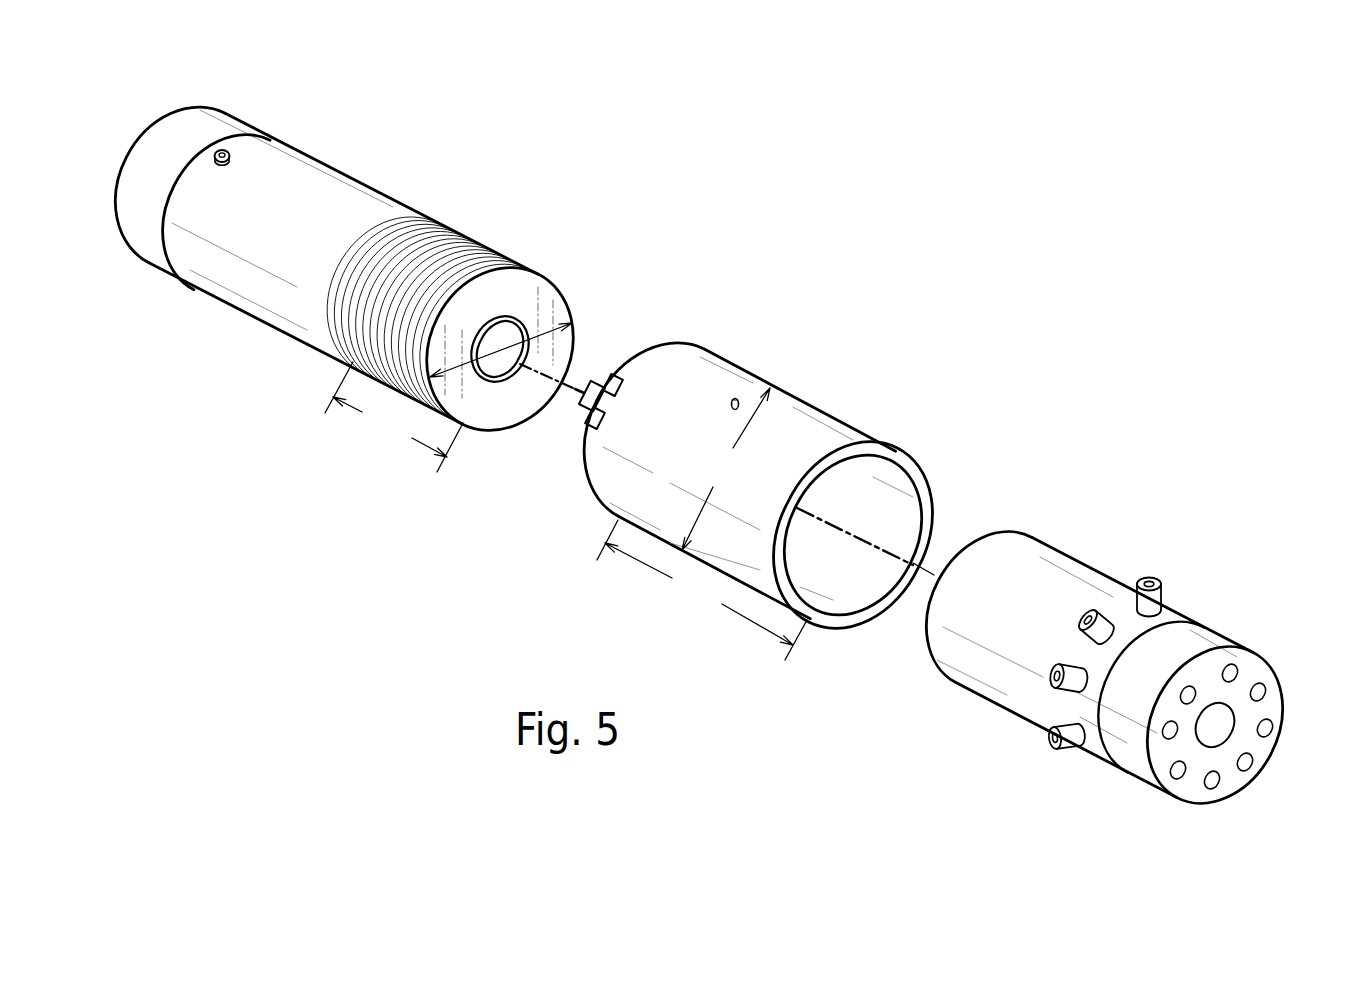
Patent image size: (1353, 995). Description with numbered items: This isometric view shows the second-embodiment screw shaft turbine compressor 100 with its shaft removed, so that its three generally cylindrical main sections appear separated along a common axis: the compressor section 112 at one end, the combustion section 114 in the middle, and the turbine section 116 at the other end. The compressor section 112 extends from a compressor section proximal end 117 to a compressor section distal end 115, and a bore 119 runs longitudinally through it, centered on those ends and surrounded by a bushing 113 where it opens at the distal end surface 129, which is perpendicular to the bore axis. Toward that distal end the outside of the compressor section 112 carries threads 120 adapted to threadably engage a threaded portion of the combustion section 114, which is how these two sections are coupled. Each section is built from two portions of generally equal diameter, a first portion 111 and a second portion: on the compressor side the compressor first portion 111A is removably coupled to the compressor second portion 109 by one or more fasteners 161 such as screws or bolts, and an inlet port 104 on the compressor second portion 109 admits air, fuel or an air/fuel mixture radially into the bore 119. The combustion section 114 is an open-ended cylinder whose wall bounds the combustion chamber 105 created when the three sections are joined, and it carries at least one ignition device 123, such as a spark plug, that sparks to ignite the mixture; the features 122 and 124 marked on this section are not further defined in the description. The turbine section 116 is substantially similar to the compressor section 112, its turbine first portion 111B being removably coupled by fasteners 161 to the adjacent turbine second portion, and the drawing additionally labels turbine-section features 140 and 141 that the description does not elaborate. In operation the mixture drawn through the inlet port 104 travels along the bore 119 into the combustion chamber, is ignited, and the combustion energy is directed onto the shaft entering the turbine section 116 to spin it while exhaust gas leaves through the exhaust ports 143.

The screw shaft turbine compressor 100 is at (394, 417).
The inlet port 104 is at (222, 150).
The combustion chamber 105 is at (500, 349).
The compressor second portion 109 is at (425, 228).
The housing tube 111 is at (307, 198).
The compressor first portion 111A is at (157, 262).
The turbine first portion 111B is at (1134, 774).
The compressor section 112 is at (368, 275).
The bushing 113 is at (510, 318).
The combustion section 114 is at (764, 475).
The compressor section distal end 115 is at (465, 428).
The turbine section 116 is at (879, 549).
The compressor section proximal end 117 is at (181, 104).
The bore 119 is at (1216, 728).
The threads 120 is at (503, 258).
The sleeve diameter 122 is at (726, 469).
The ignition device 123 is at (738, 398).
The sleeve length 124 is at (702, 590).
The distal end surface 129 is at (503, 412).
The second housing body 140 is at (1005, 532).
The end plate 141 is at (1260, 670).
The exhaust ports 143 is at (1083, 608).
The fasteners 161 is at (1229, 670).